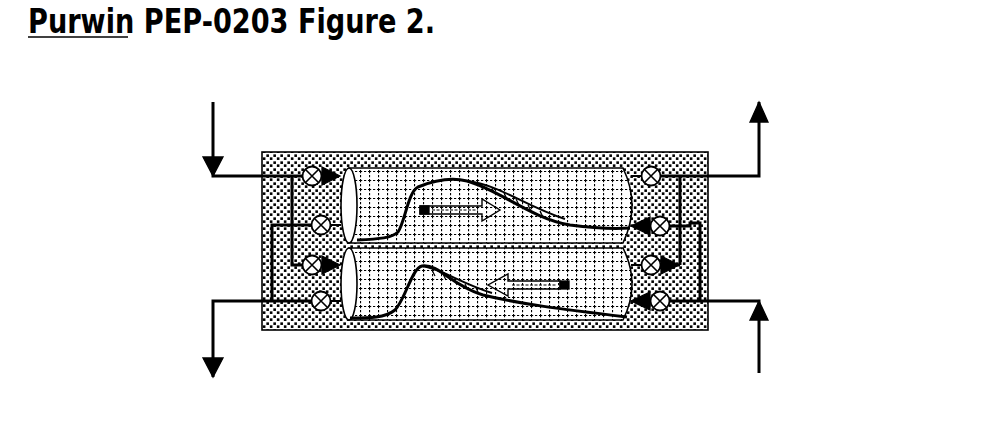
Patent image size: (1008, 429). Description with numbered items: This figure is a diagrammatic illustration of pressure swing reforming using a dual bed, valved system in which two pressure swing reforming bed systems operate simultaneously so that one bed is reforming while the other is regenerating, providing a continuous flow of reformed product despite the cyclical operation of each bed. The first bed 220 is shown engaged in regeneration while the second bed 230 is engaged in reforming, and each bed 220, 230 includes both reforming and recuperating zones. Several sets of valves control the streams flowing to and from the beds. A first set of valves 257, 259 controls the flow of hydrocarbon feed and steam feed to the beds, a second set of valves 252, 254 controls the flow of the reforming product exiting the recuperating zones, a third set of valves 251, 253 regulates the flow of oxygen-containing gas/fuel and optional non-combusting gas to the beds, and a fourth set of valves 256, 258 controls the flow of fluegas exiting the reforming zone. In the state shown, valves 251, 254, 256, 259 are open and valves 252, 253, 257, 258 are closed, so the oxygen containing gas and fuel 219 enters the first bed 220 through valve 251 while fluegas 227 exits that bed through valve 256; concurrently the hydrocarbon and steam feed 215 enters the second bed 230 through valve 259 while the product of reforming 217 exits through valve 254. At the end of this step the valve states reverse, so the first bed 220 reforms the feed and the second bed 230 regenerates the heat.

The hydrocarbon and steam feed 215 is at (760, 327).
The product of reforming 217 is at (213, 317).
The oxygen containing gas and fuel 219 is at (212, 150).
The first bed 220 is at (527, 187).
The fluegas 227 is at (762, 160).
The second bed 230 is at (455, 298).
The valve 251 is at (300, 183).
The valve 252 is at (300, 224).
The valve 253 is at (300, 266).
The valve 254 is at (300, 297).
The valve 256 is at (700, 180).
The valve 257 is at (669, 227).
The valve 258 is at (680, 257).
The valve 259 is at (700, 294).